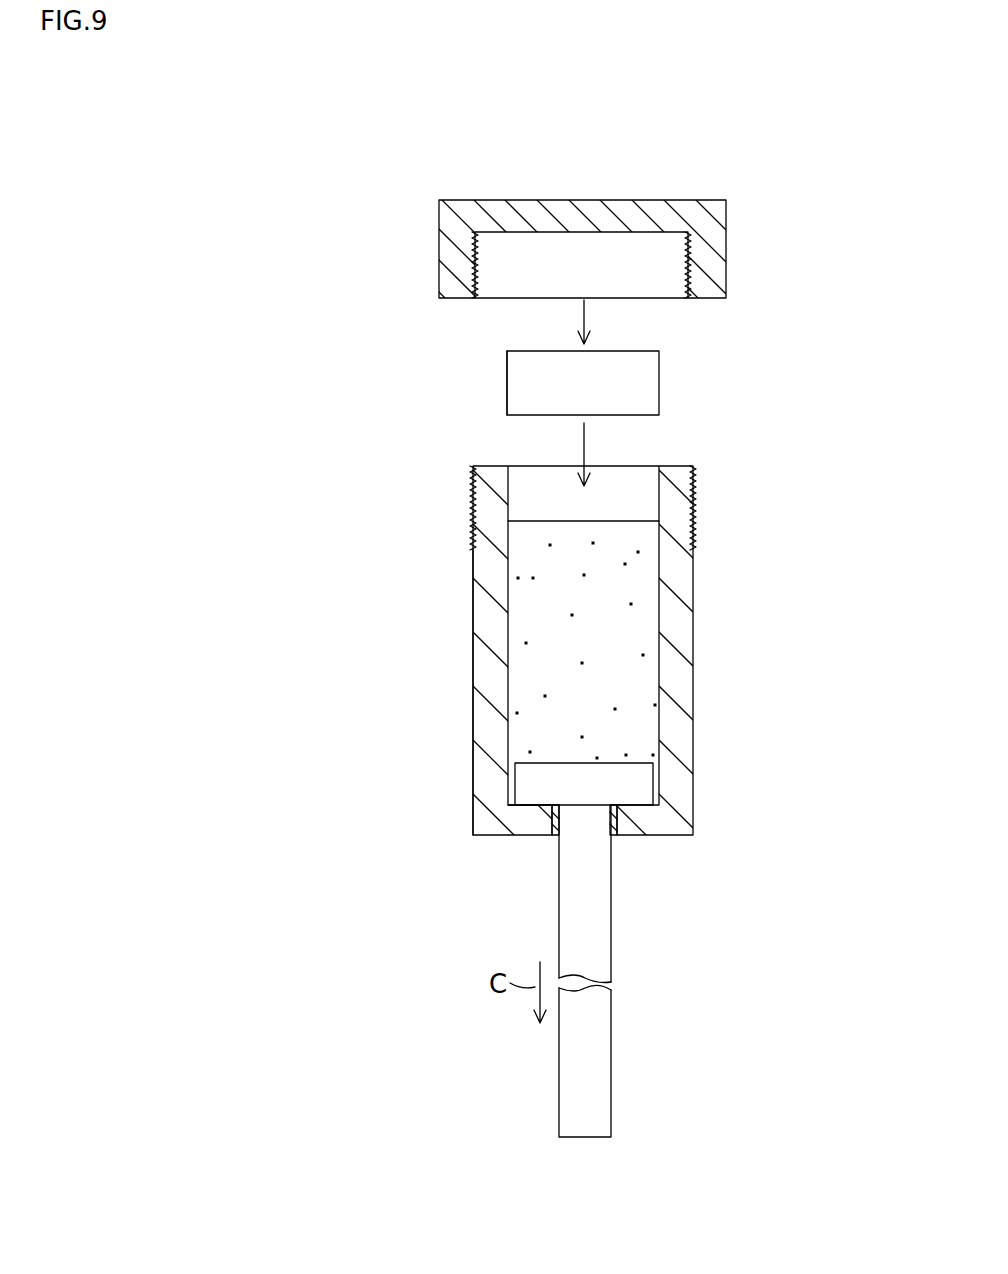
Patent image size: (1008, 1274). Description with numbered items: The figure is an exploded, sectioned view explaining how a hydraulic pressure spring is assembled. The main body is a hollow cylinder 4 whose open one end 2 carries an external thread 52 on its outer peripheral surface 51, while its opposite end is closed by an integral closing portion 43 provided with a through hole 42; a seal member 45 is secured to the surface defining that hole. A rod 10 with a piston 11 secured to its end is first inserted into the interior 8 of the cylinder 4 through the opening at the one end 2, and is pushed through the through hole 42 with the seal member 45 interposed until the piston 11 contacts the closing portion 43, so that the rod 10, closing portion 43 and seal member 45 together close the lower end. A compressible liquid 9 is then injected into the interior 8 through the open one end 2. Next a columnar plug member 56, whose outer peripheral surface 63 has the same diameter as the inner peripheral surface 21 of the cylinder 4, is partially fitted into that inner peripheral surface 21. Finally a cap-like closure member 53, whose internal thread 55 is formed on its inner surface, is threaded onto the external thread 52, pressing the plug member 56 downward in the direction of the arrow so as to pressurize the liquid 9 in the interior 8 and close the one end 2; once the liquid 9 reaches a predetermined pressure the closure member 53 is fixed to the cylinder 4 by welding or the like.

The closure member 53 is at (575, 197).
The internal thread 55 is at (478, 276).
The plug member 56 is at (642, 395).
The outer peripheral surface 63 is at (507, 388).
The cylinder 4 is at (485, 665).
The outer peripheral surface 51 is at (473, 607).
The external thread 52 is at (473, 506).
The one end 2 is at (680, 500).
The inner peripheral surface 21 is at (656, 593).
The interior 8 is at (645, 622).
The compressible liquid 9 is at (640, 657).
The piston 11 is at (525, 782).
The closing portion 43 is at (523, 828).
The seal member 45 is at (554, 835).
The through hole 42 is at (607, 832).
The rod 10 is at (598, 944).